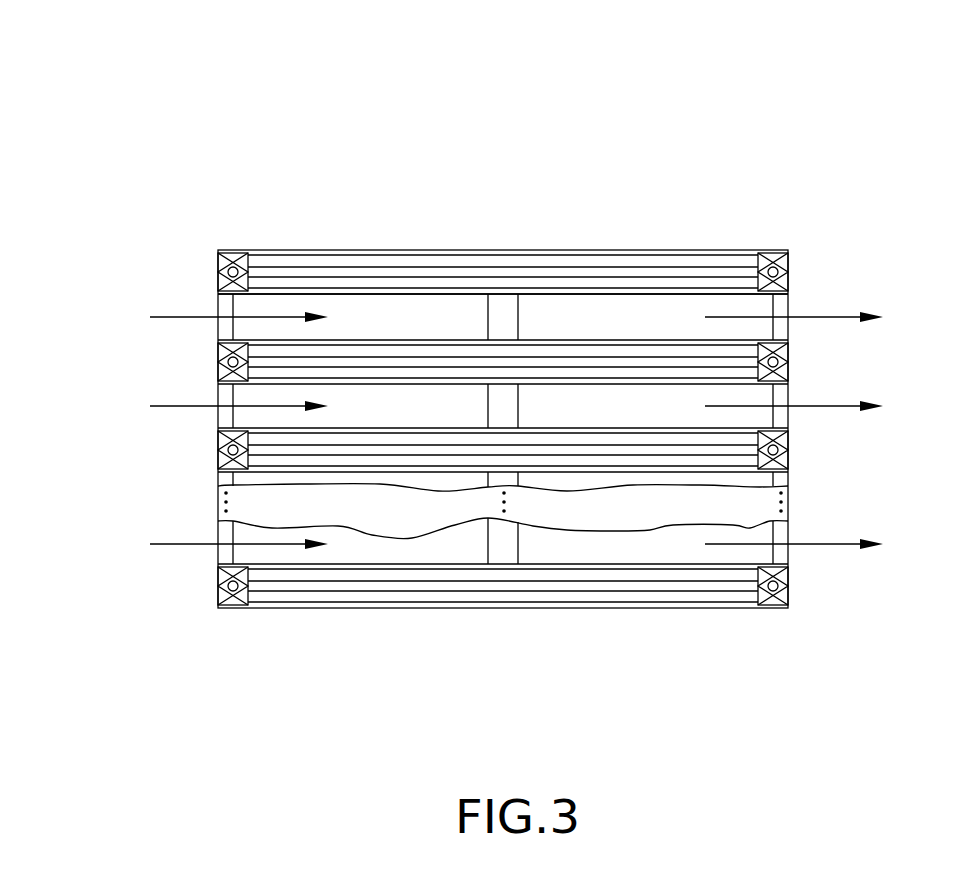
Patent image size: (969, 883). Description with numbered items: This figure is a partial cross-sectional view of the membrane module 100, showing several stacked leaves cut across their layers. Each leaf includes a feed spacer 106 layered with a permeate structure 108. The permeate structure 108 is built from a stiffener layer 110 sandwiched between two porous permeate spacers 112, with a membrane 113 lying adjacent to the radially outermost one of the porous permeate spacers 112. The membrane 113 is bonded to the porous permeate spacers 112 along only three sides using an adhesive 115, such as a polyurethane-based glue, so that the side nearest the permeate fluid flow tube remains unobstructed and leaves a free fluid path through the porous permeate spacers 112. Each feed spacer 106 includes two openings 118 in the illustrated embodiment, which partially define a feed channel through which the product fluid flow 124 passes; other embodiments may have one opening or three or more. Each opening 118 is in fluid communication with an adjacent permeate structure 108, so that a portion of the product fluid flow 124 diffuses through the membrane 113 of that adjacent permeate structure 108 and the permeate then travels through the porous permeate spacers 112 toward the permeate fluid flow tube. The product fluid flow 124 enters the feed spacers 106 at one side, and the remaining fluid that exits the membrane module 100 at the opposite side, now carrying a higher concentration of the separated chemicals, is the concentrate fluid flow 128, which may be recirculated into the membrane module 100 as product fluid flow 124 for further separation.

The membrane module 100 is at (810, 84).
The feed spacer 106 is at (462, 296).
The permeate structure 108 is at (190, 245).
The stiffener layer 110 is at (272, 262).
The porous permeate spacers 112 is at (347, 278).
The membrane 113 is at (638, 293).
The adhesive 115 is at (233, 262).
The openings 118 is at (374, 304).
The product fluid flow 124 is at (162, 316).
The concentrate fluid flow 128 is at (835, 317).